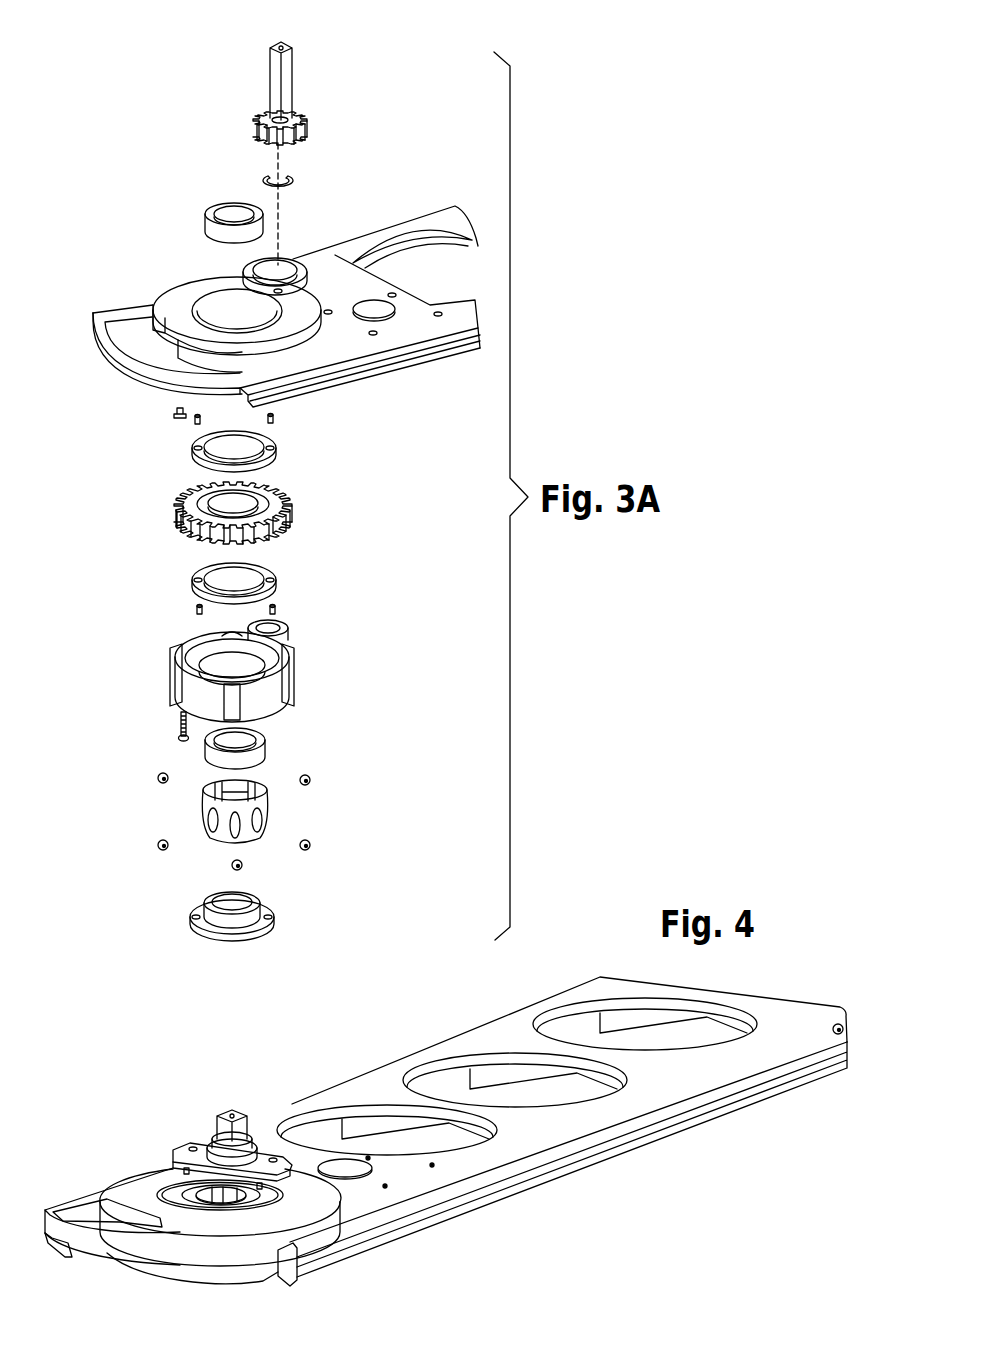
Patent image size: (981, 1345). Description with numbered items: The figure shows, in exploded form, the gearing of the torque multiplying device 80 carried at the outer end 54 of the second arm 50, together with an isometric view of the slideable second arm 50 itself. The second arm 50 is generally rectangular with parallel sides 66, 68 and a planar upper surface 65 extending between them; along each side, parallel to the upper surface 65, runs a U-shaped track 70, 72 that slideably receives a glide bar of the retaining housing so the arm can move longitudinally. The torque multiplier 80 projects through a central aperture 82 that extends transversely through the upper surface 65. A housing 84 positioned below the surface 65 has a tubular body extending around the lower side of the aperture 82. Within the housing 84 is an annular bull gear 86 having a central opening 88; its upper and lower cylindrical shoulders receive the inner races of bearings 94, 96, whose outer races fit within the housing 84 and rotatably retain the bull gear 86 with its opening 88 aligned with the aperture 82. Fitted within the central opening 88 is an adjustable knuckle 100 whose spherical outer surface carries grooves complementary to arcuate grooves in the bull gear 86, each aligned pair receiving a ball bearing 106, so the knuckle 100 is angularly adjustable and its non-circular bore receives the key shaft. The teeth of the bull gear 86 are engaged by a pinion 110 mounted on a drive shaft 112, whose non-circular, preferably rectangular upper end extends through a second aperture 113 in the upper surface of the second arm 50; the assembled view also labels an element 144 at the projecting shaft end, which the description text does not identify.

In FIG. 3A, the second arm 50 is at (398, 220).
In FIG. 3A, the outer end 54 is at (133, 307).
In FIG. 3A, the planar upper surface 65 is at (363, 288).
In FIG. 4, the planar upper surface 65 is at (493, 1032).
In FIG. 4, the parallel side 66 is at (403, 1057).
In FIG. 4, the parallel side 68 is at (673, 1120).
In FIG. 4, the U-shaped track 70 is at (46, 1224).
In FIG. 4, the U-shaped track 72 is at (293, 1255).
In FIG. 3A, the torque multiplying device 80 is at (400, 480).
In FIG. 4, the torque multiplying device 80 is at (170, 1175).
In FIG. 3A, the central aperture 82 is at (252, 298).
In FIG. 3A, the housing 84 is at (293, 665).
In FIG. 3A, the annular bull gear 86 is at (283, 505).
In FIG. 4, the central opening 88 is at (213, 1197).
In FIG. 3A, the bearing 94 is at (275, 445).
In FIG. 3A, the bearing 96 is at (275, 572).
In FIG. 3A, the adjustable knuckle 100 is at (203, 813).
In FIG. 3A, the ball bearing 106 is at (311, 843).
In FIG. 3A, the pinion 110 is at (258, 125).
In FIG. 3A, the drive shaft 112 is at (268, 92).
In FIG. 3A, the second aperture 113 is at (325, 250).
In FIG. 4, the drive shaft end 144 is at (215, 1120).